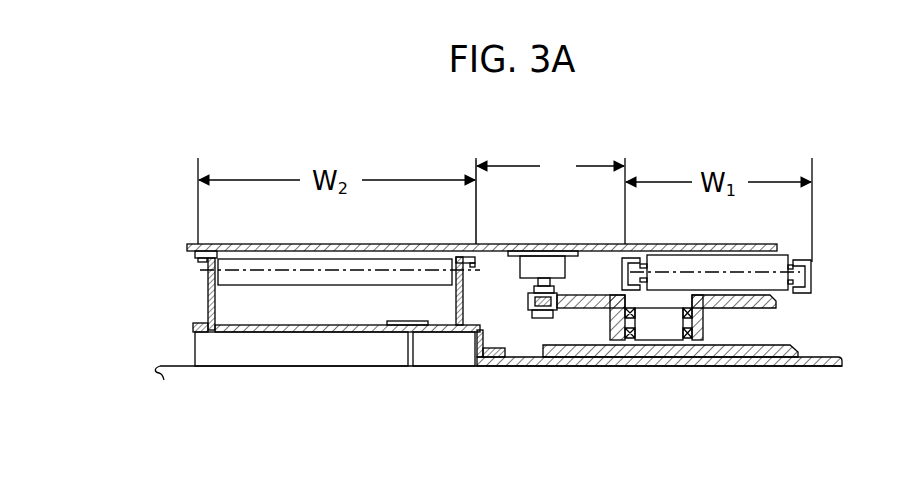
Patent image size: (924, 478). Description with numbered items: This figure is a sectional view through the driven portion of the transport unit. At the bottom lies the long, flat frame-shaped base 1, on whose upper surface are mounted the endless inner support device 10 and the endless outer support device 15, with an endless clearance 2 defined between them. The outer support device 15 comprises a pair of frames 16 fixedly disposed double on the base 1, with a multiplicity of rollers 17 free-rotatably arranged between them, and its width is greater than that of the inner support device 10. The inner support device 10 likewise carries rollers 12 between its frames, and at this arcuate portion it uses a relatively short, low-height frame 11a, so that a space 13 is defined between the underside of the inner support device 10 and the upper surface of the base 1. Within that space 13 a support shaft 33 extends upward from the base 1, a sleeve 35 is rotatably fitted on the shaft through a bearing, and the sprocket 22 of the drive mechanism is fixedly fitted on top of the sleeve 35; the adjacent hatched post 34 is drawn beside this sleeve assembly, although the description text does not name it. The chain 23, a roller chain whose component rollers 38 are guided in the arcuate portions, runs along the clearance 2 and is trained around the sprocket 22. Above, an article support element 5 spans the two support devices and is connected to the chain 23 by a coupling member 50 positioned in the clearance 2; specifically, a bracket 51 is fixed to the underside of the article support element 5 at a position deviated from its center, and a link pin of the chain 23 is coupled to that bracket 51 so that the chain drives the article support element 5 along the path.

The base 1 is at (352, 335).
The clearance 2 is at (521, 196).
The article support element 5 is at (740, 246).
The inner support device 10 is at (815, 278).
The low-height frame 11a is at (808, 293).
The rollers 12 is at (777, 266).
The space 13 is at (745, 317).
The outer support device 15 is at (206, 282).
The frames 16 is at (208, 297).
The rollers 17 is at (270, 278).
The sprocket 22 is at (767, 307).
The chain 23 is at (540, 323).
The support shaft 33 is at (660, 328).
The left post 34 is at (620, 325).
The sleeve 35 is at (707, 328).
The rollers 38 is at (527, 298).
The coupling member 50 is at (567, 272).
The bracket 51 is at (517, 272).